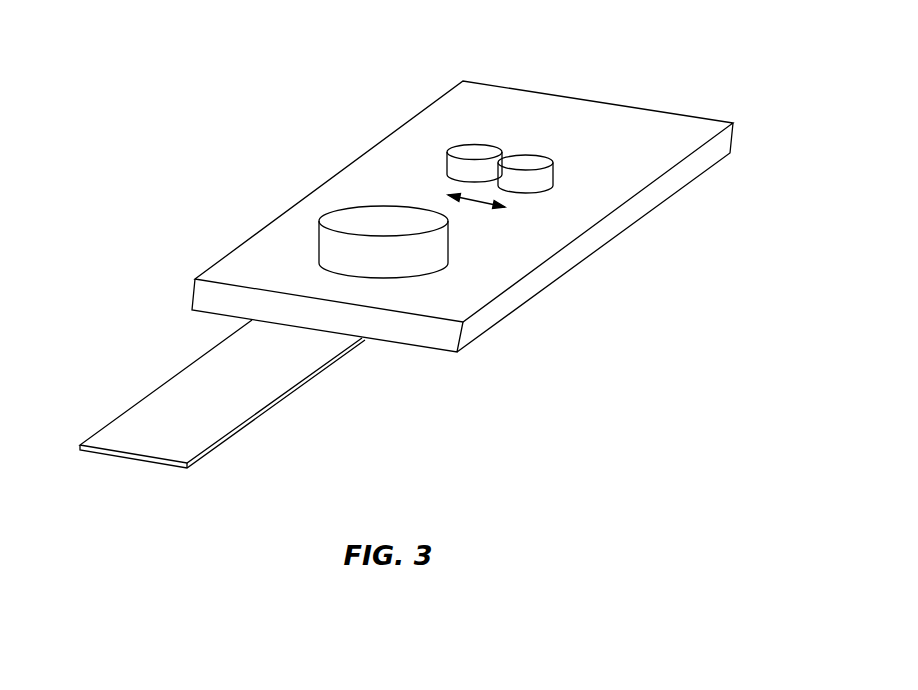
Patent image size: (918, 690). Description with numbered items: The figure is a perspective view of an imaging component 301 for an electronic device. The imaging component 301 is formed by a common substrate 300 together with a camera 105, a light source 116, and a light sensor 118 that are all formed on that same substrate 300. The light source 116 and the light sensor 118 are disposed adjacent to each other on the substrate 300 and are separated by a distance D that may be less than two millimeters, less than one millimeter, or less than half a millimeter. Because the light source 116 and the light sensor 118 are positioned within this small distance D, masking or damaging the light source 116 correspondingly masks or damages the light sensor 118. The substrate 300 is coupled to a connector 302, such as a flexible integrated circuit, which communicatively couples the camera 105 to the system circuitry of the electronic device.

The camera 105 is at (355, 217).
The light source 116 is at (480, 152).
The light sensor 118 is at (528, 160).
The common substrate 300 is at (651, 137).
The imaging component 301 is at (641, 7).
The connector 302 is at (160, 410).
The distance D is at (472, 198).